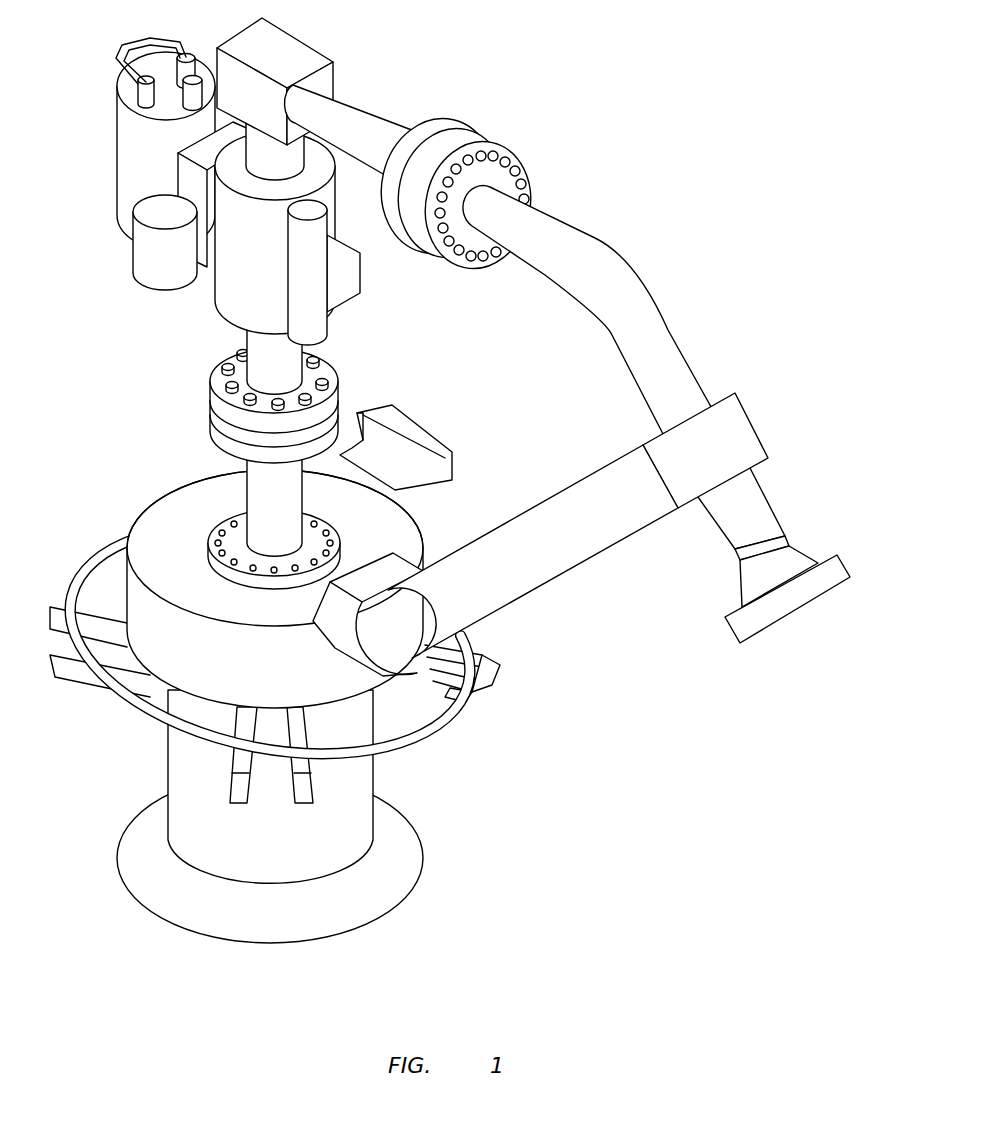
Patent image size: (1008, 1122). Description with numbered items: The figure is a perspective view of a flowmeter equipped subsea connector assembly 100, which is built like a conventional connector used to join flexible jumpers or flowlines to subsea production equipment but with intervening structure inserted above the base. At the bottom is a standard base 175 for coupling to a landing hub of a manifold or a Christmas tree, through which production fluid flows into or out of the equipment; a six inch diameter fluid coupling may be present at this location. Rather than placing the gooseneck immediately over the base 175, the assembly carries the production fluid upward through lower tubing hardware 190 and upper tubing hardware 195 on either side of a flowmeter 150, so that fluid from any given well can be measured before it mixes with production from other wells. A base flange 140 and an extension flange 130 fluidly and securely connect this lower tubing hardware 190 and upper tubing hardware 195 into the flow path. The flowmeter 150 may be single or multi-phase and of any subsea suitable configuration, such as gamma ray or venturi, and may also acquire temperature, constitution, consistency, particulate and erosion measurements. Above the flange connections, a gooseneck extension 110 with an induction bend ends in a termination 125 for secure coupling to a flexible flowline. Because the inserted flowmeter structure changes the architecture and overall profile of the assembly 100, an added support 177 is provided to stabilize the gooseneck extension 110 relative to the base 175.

The flowmeter equipped subsea connector assembly 100 is at (462, 475).
The gooseneck extension 110 is at (610, 268).
The termination 125 is at (812, 530).
The extension flange 130 is at (483, 143).
The base flange 140 is at (218, 430).
The flowmeter 150 is at (128, 162).
The base 175 is at (440, 793).
The support 177 is at (560, 517).
The lower tubing hardware 190 is at (263, 358).
The upper tubing hardware 195 is at (356, 110).